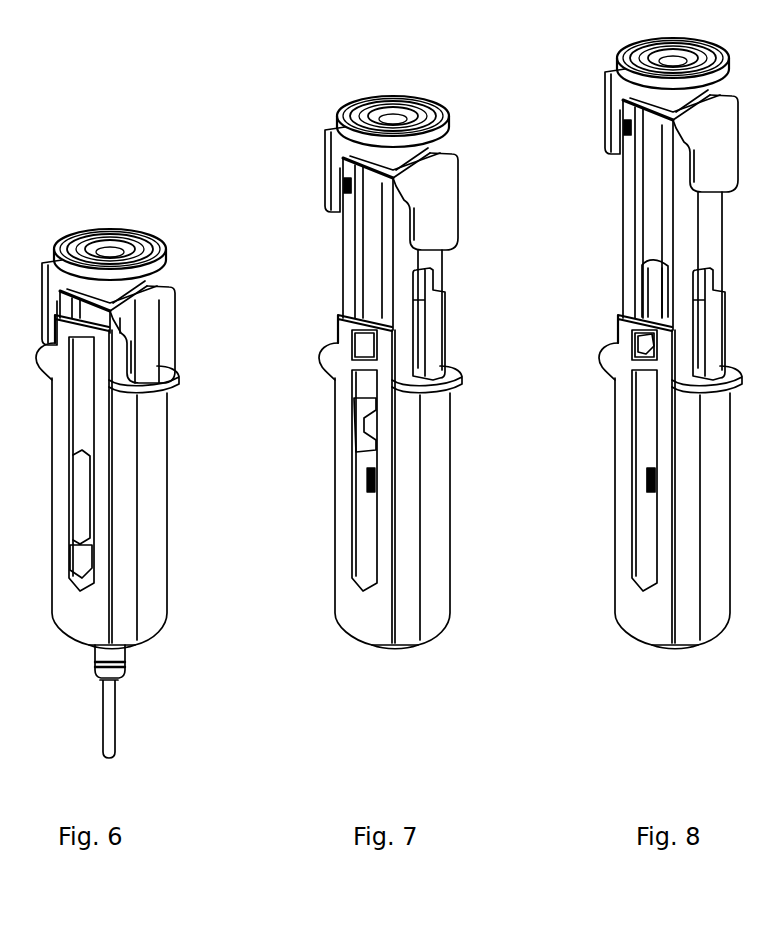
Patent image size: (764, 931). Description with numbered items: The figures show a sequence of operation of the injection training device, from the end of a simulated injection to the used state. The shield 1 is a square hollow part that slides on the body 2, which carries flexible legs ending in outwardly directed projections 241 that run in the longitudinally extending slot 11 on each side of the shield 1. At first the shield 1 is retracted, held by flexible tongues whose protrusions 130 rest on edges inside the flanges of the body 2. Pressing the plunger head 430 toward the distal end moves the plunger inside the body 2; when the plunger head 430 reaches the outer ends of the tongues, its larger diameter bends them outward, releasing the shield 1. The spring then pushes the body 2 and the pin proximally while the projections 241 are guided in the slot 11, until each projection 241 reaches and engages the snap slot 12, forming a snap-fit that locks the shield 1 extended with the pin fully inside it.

In FIG. 6, the shield 1 is at (122, 540).
In FIG. 7, the shield 1 is at (407, 484).
In FIG. 8, the shield 1 is at (670, 378).
In FIG. 7, the body 2 is at (420, 210).
In FIG. 8, the body 2 is at (637, 167).
In FIG. 7, the longitudinally extending slot 11 is at (367, 520).
In FIG. 7, the snap slot 12 is at (352, 343).
In FIG. 8, the snap slot 12 is at (640, 343).
In FIG. 6, the protrusion 130 is at (176, 292).
In FIG. 7, the projection 241 is at (365, 403).
In FIG. 8, the projection 241 is at (647, 348).
In FIG. 6, the plunger head 430 is at (133, 238).